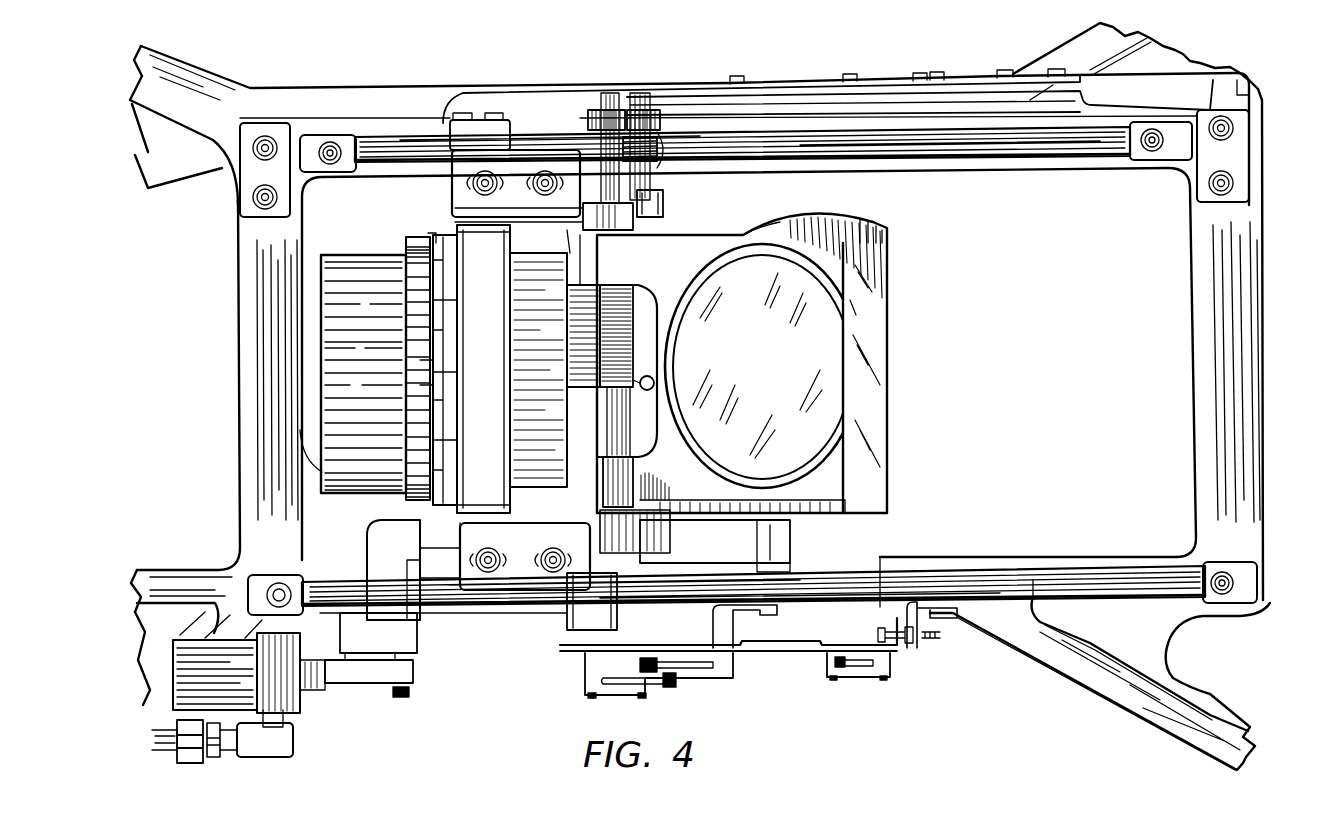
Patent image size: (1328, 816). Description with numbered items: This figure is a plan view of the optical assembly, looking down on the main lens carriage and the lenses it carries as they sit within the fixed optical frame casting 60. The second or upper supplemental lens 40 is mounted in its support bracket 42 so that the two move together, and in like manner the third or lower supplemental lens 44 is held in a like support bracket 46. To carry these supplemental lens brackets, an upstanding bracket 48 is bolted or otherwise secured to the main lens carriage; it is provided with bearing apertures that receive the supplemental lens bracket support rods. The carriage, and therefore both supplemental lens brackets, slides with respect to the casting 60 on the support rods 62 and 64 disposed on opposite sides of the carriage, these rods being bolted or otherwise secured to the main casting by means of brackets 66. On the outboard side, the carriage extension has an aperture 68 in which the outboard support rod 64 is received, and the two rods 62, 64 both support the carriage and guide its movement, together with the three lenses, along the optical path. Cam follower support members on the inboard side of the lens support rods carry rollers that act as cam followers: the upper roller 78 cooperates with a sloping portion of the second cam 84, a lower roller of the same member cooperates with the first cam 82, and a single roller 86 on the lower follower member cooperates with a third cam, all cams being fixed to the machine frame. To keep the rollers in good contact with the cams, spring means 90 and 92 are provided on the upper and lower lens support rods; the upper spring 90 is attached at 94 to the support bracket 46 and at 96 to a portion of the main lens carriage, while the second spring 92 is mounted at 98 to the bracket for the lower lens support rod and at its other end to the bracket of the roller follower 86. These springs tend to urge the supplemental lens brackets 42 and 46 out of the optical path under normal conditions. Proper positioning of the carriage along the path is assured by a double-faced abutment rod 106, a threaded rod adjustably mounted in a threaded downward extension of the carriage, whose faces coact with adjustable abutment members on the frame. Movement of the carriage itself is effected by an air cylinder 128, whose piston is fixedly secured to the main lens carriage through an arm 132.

The upper supplemental lens 40 is at (855, 307).
The support bracket 42 is at (700, 233).
The lower supplemental lens 44 is at (887, 352).
The support bracket 46 is at (690, 523).
The upstanding bracket 48 is at (455, 245).
The fixed optical frame casting 60 is at (238, 367).
The support rod 62 is at (987, 160).
The support rod 64 is at (1038, 567).
The bracket 66 is at (325, 137).
The aperture 68 is at (1265, 570).
The roller 78 is at (607, 100).
The first cam 82 is at (812, 92).
The second cam 84 is at (957, 95).
The roller 86 is at (649, 108).
The spring means 90 is at (555, 343).
The spring means 92 is at (657, 143).
The spring attachment point 94 is at (655, 383).
The spring attachment point 96 is at (588, 192).
The spring attachment point 98 is at (657, 188).
The double-faced abutment rod 106 is at (667, 153).
The air cylinder 128 is at (237, 745).
The arm 132 is at (320, 683).